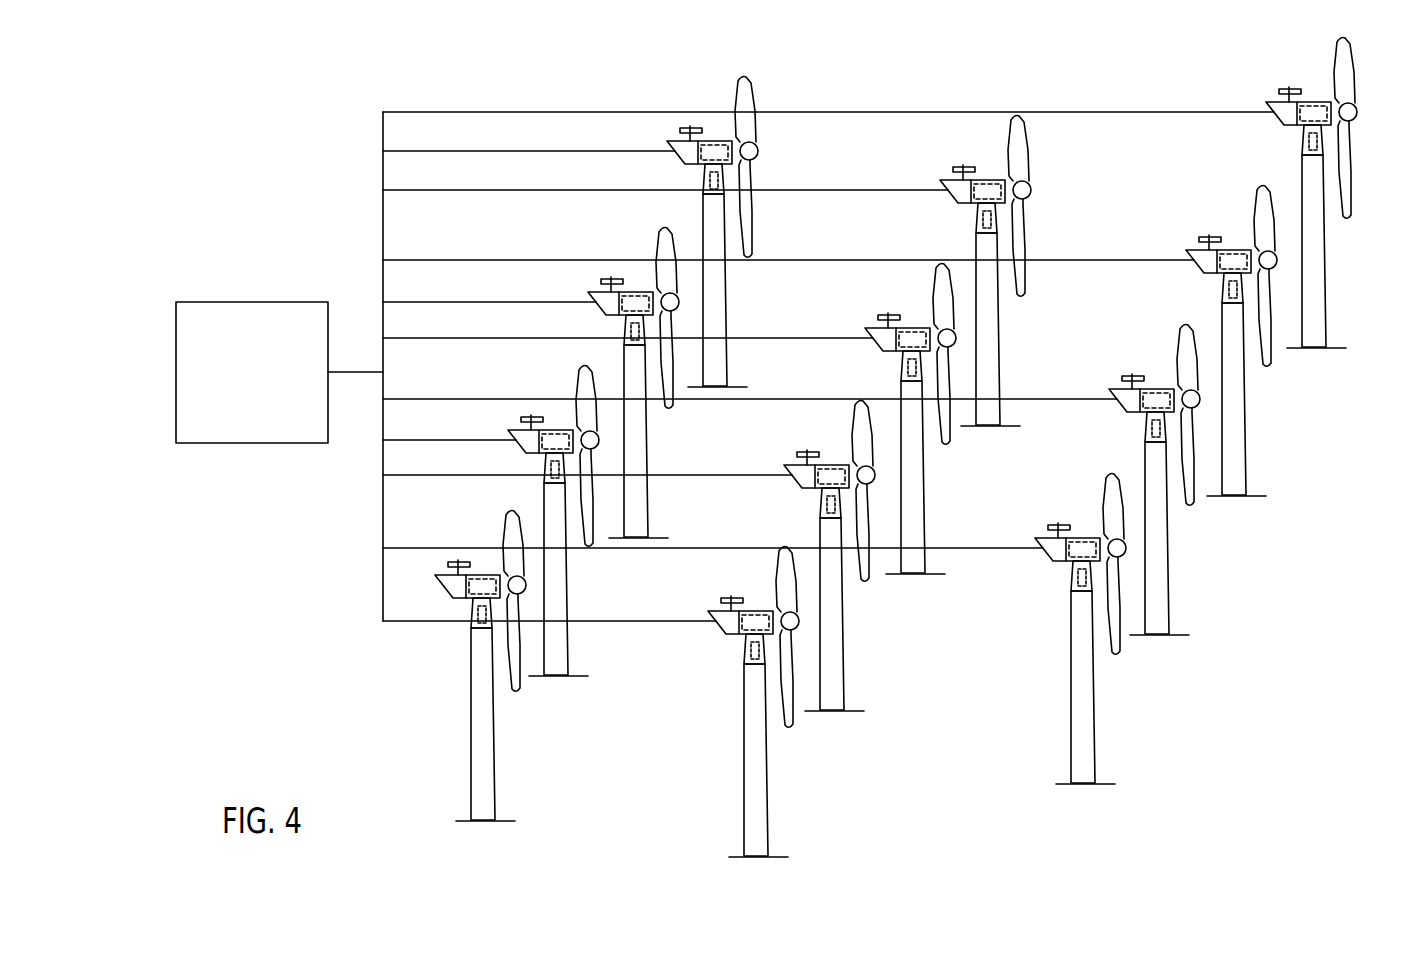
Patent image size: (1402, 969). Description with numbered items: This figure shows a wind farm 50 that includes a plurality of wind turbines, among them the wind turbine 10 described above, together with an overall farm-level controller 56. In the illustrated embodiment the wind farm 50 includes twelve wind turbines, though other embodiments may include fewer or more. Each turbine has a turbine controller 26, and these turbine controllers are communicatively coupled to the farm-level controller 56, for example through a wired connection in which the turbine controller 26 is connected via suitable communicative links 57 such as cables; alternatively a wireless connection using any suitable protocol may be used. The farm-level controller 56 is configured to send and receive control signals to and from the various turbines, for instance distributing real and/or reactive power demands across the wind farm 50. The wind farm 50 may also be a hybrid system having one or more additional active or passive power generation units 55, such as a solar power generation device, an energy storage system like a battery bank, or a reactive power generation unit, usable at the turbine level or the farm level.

The wind farm 50 is at (285, 190).
The farm-level controller 56 is at (264, 385).
The communicative links 57 is at (543, 258).
The wind turbine 10 is at (498, 758).
The turbine controller 26 is at (416, 550).
The power generation unit 55 is at (727, 688).